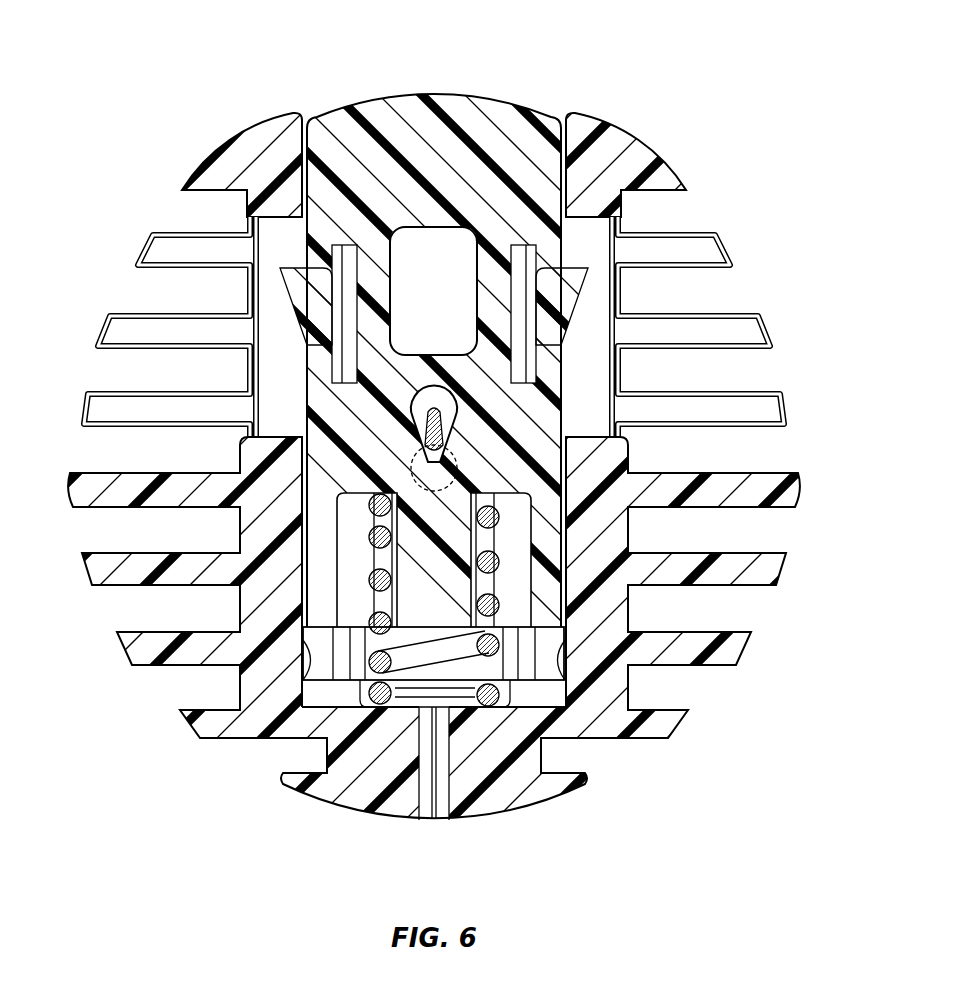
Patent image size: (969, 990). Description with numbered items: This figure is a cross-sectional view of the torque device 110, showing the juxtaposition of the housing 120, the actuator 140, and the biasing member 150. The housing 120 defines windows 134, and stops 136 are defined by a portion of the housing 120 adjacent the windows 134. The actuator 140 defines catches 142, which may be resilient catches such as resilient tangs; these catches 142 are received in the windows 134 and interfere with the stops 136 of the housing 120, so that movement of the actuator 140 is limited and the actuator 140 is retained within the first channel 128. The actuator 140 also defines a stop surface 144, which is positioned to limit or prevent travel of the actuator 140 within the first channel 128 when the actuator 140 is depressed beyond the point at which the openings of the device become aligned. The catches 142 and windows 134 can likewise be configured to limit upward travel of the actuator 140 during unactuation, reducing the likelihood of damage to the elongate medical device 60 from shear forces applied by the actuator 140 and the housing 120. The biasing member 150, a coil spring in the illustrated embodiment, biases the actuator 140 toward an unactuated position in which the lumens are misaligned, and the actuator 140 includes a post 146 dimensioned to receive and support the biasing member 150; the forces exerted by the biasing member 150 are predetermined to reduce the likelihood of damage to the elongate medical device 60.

The torque device 110 is at (660, 97).
The housing 120 is at (610, 690).
The first channel 128 is at (307, 648).
The windows 134 is at (272, 368).
The stops 136 is at (236, 157).
The actuator 140 is at (468, 100).
The catches 142 is at (305, 289).
The stop surface 144 is at (333, 630).
The post 146 is at (457, 537).
The biasing member 150 is at (443, 655).
The elongate medical device 60 is at (418, 445).